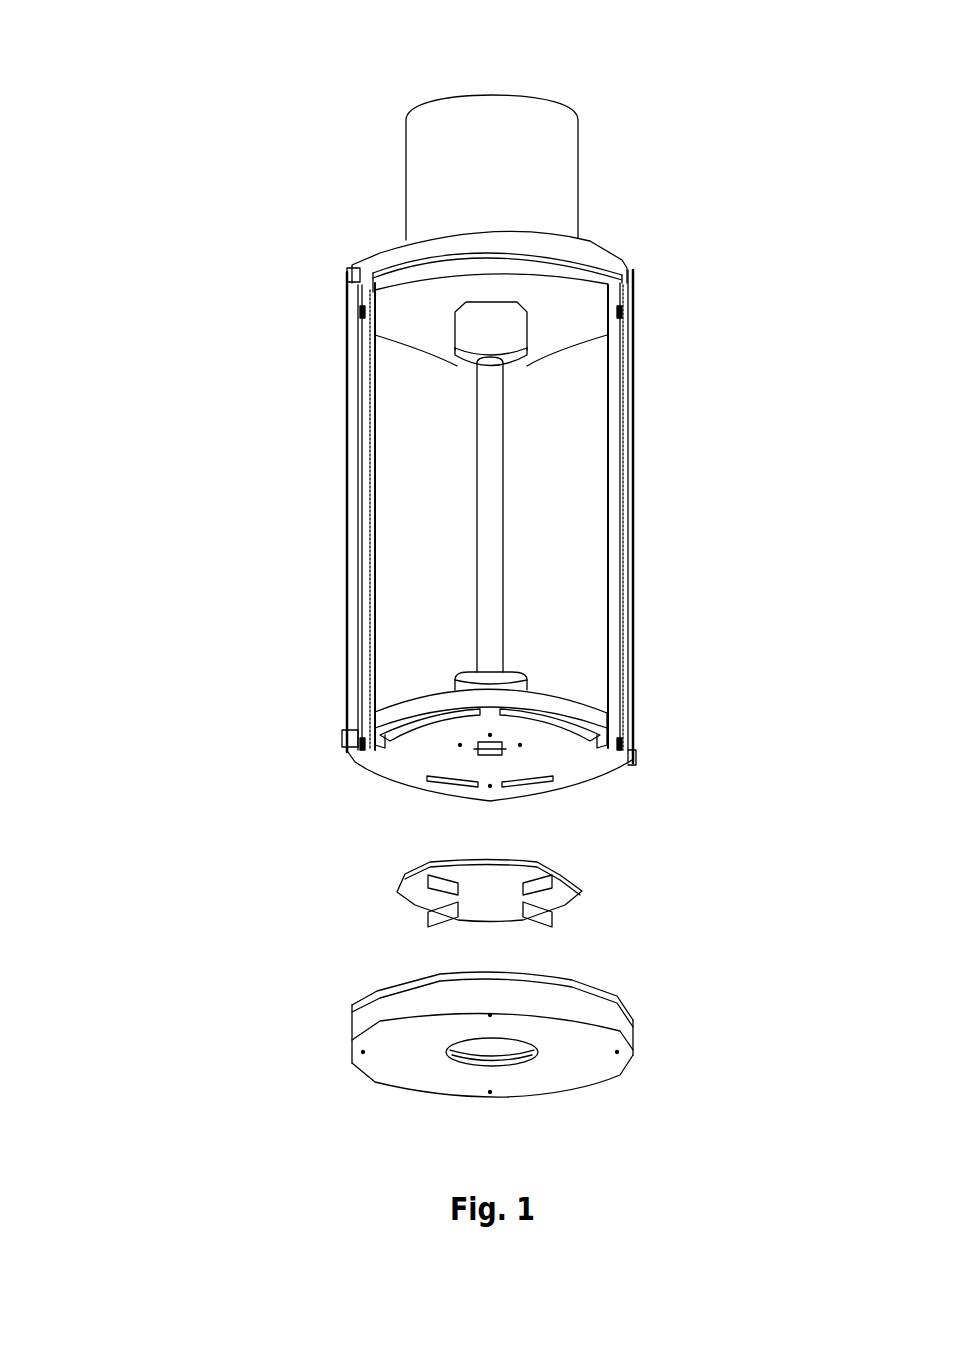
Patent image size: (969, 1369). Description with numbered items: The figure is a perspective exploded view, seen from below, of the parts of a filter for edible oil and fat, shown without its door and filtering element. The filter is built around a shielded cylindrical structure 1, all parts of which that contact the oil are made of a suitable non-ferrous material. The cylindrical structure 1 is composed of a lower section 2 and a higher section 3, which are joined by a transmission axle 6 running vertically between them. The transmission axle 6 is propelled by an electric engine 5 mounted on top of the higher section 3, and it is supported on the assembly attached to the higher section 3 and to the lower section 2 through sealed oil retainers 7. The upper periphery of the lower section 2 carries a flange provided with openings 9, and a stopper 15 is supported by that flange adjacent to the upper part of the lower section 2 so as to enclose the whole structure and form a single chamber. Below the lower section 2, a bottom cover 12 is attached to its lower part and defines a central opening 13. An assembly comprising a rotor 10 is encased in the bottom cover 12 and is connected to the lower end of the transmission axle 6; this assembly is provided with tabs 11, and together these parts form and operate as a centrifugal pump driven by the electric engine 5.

The cylindrical structure 1 is at (214, 125).
The lower section 2 is at (418, 748).
The higher section 3 is at (583, 257).
The electric engine 5 is at (525, 147).
The transmission axle 6 is at (497, 443).
The sealed oil retainers 7 is at (468, 327).
The openings 9 is at (590, 762).
The rotor 10 is at (563, 888).
The tabs 11 is at (440, 913).
The bottom cover 12 is at (603, 1017).
The central opening 13 is at (490, 1048).
The stopper 15 is at (637, 535).